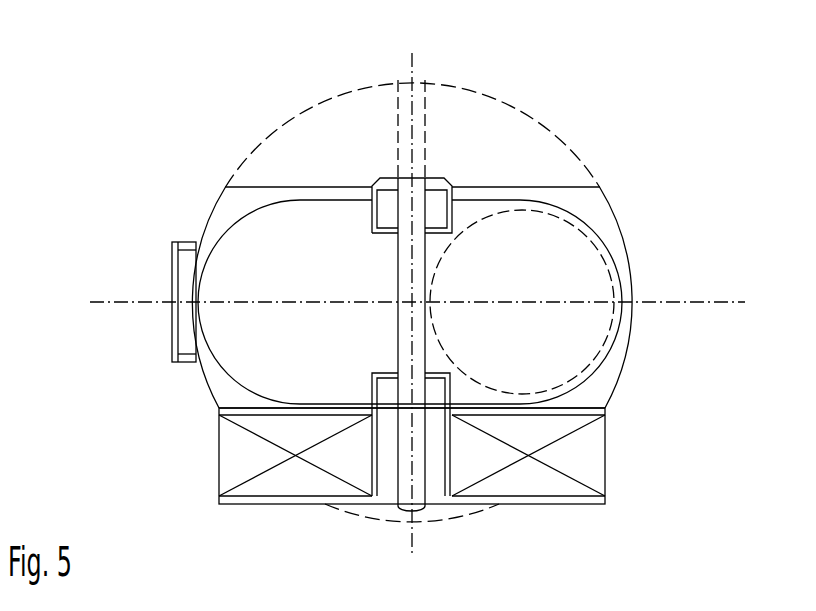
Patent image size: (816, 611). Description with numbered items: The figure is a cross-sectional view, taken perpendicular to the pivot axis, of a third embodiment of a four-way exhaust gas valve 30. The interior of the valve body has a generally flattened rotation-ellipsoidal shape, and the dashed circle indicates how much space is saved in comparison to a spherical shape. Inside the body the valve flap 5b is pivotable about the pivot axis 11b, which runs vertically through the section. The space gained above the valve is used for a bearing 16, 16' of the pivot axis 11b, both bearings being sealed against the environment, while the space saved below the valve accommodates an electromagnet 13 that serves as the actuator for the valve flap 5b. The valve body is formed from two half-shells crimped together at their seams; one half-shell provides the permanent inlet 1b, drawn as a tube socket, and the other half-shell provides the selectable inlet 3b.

The four-way exhaust gas valve 30 is at (188, 201).
The valve flap 5b is at (320, 290).
The permanent inlet 1b is at (618, 277).
The selectable inlet 3b is at (171, 333).
The electromagnet 13 is at (592, 458).
The bearing 16 is at (420, 179).
The bearing 16' is at (385, 431).
The pivot axis 11b is at (418, 482).